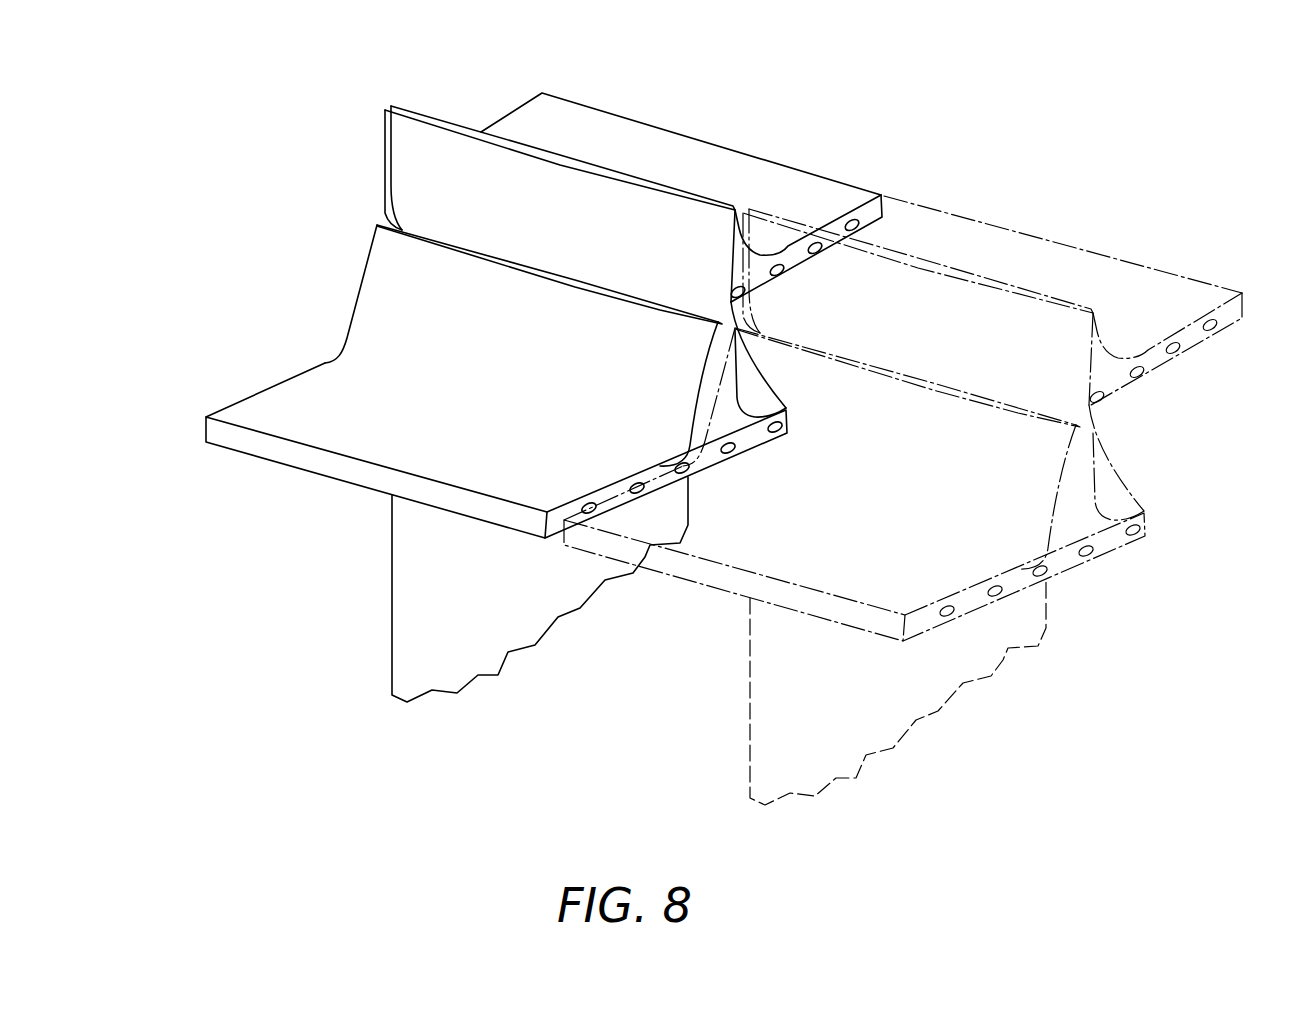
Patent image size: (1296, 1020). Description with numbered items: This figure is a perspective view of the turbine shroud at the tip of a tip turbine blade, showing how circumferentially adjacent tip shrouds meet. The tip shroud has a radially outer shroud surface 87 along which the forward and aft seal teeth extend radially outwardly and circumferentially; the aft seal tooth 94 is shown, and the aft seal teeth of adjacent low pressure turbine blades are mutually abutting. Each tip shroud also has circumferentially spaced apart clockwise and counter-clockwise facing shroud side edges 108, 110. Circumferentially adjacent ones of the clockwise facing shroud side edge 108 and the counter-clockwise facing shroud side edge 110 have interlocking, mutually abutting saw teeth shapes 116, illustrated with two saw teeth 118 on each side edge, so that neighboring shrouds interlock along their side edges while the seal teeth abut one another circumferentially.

The radially outer shroud surface 87 is at (350, 393).
The aft seal tooth 94 is at (413, 113).
The clockwise facing shroud side edge 108 is at (884, 203).
The counter-clockwise facing shroud side edge 110 is at (223, 407).
The interlocking mutually abutting saw teeth shapes 116 is at (806, 326).
The saw teeth 118 is at (1127, 506).